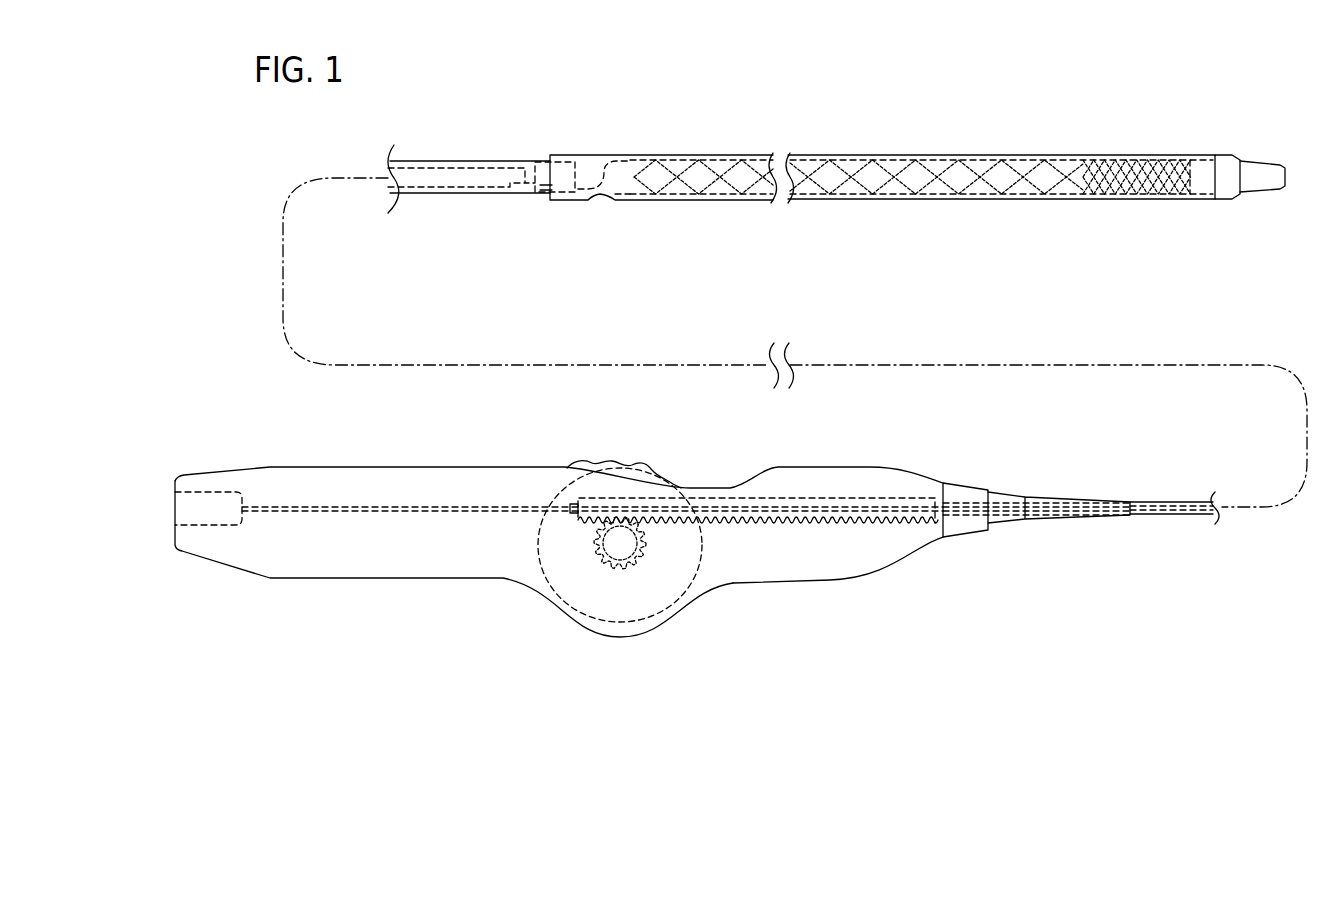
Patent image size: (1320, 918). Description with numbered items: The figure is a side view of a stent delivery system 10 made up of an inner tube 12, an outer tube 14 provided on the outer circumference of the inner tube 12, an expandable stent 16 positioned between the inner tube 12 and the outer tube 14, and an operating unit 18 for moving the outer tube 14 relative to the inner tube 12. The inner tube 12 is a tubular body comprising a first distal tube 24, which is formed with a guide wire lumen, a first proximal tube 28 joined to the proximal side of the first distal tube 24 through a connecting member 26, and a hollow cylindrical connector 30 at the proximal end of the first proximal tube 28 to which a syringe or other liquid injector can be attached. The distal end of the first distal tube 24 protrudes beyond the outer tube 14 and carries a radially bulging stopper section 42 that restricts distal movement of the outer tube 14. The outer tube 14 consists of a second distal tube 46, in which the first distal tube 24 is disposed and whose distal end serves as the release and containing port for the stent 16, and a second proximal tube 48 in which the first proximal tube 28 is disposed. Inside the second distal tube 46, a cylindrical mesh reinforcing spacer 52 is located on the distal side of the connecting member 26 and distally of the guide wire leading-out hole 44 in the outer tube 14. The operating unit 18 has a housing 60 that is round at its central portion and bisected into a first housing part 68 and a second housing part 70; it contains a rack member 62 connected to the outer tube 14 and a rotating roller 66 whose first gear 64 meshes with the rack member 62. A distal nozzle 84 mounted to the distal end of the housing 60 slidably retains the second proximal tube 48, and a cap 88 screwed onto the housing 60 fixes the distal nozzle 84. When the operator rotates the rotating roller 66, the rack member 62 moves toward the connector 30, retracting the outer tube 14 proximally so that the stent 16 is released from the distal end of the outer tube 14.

The stent delivery system 10 is at (1086, 103).
The inner tube 12 is at (1035, 177).
The outer tube 14 is at (1000, 177).
The stent 16 is at (1122, 153).
The operating unit 18 is at (364, 582).
The first distal tube 24 is at (1264, 172).
The connecting member 26 is at (534, 162).
The first proximal tube 28 is at (436, 170).
The connector 30 is at (199, 497).
The stopper section 42 is at (1226, 200).
The guide wire leading-out hole 44 is at (600, 200).
The second distal tube 46 is at (1082, 200).
The second proximal tube 48 is at (1173, 503).
The reinforcing spacer 52 is at (912, 200).
The housing 60 is at (559, 533).
The rack member 62 is at (812, 500).
The first gear 64 is at (596, 541).
The rotating roller 66 is at (632, 466).
The first housing part 68 is at (762, 566).
The second housing part 70 is at (838, 584).
The distal nozzle 84 is at (1073, 497).
The cap 88 is at (963, 492).